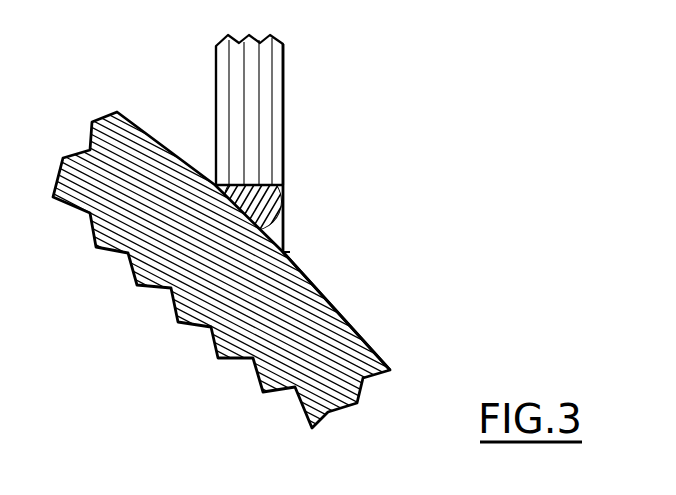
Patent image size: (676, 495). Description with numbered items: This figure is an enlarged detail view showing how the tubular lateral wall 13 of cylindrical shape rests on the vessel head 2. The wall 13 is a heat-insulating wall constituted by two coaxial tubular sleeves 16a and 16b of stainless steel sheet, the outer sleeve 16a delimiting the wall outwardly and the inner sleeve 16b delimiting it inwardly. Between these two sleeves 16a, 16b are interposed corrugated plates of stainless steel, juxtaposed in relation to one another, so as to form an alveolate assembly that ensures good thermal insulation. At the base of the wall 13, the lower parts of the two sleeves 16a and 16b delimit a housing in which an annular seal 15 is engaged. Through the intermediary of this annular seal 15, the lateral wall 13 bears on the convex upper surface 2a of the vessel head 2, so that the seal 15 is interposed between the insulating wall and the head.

The vessel head 2 is at (193, 302).
The convex upper surface 2a is at (320, 292).
The tubular lateral wall 13 is at (252, 163).
The annular seal 15 is at (272, 212).
The outer tubular sleeve 16a is at (283, 97).
The inner tubular sleeve 16b is at (215, 80).